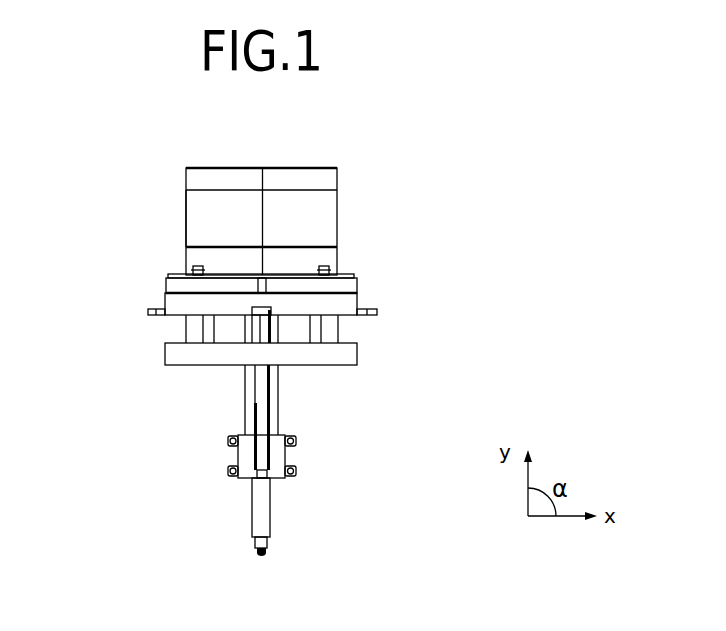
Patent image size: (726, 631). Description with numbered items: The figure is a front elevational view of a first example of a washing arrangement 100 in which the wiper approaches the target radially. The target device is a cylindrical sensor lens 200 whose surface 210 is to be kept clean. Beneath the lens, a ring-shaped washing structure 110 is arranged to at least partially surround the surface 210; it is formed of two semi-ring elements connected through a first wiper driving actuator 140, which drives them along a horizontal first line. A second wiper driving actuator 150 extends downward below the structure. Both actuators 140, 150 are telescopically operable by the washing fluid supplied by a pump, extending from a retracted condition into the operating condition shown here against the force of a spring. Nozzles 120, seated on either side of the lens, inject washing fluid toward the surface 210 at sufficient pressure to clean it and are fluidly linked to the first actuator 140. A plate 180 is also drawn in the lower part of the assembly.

The washing arrangement 100 is at (307, 318).
The ring-shaped washing structure 110 is at (382, 293).
The nozzles or fluid ejectors 120 is at (196, 271).
The first wiper driving actuator 140 is at (245, 284).
The second wiper driving actuator 150 is at (255, 520).
The lower plate 180 is at (382, 361).
The sensor lens 200 is at (327, 161).
The surface 210 is at (187, 197).